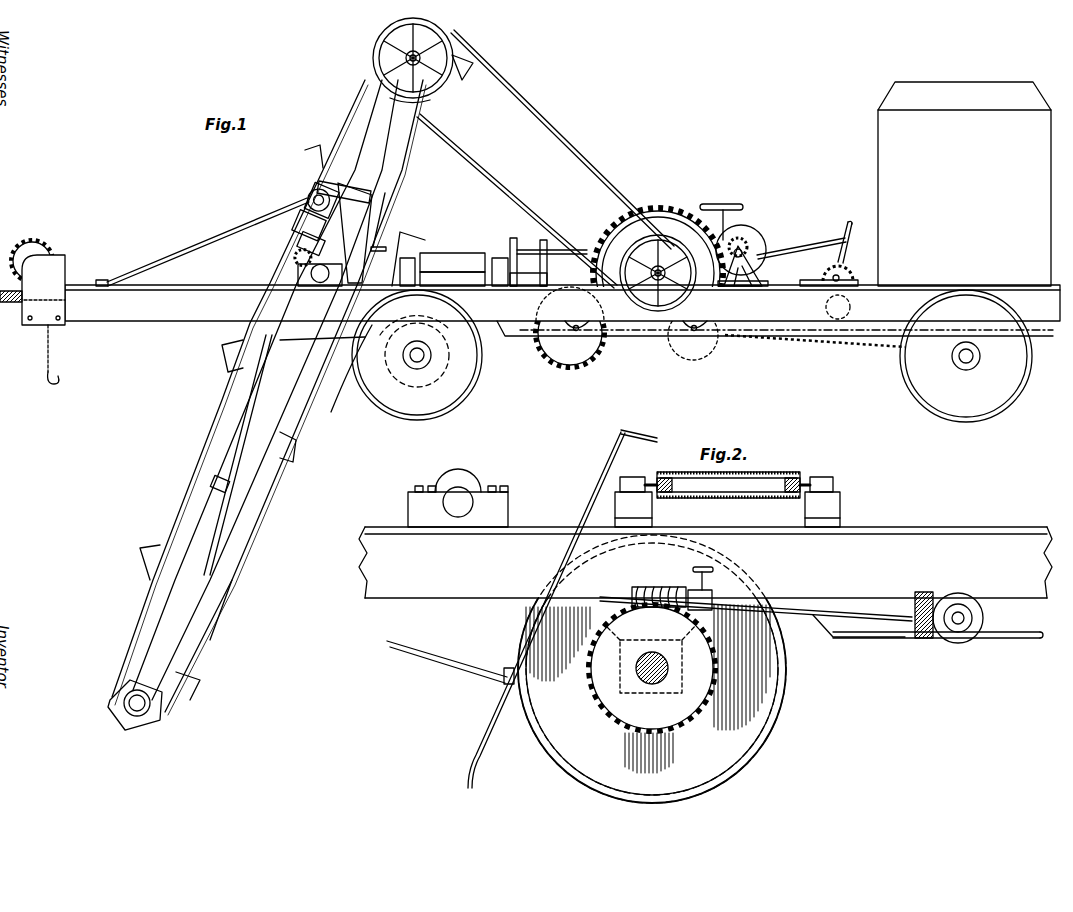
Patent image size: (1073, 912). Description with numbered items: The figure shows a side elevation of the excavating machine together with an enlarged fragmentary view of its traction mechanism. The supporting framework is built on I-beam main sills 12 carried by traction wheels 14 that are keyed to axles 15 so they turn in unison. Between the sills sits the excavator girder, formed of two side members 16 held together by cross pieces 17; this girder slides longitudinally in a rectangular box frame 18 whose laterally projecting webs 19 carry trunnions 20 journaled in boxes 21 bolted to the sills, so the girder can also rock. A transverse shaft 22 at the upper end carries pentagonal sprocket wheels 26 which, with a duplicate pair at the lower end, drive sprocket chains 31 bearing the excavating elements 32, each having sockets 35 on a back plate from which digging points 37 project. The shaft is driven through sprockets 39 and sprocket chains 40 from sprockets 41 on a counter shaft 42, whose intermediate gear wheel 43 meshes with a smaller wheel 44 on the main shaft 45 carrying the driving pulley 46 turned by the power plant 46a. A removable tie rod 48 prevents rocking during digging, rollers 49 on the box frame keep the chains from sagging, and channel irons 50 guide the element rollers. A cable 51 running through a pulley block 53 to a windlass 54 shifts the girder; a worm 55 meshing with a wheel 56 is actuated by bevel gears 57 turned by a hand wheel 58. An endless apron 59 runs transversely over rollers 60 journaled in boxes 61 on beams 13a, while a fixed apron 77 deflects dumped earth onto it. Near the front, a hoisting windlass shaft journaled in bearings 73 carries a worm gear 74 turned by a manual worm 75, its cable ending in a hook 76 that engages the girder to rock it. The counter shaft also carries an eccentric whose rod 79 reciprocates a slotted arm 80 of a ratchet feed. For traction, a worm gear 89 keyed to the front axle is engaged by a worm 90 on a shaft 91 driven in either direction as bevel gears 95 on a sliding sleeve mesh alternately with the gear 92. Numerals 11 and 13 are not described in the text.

In FIG. 1, the lever 11 is at (395, 259).
In FIG. 1, the main sills 12 is at (190, 318).
In FIG. 2, the main sills 12 is at (504, 592).
In FIG. 1, the bearing standard 13 is at (540, 286).
In FIG. 1, the beams 13a is at (416, 276).
In FIG. 2, the beams 13a is at (648, 498).
In FIG. 1, the traction wheels 14 is at (470, 372).
In FIG. 2, the traction wheels 14 is at (783, 695).
In FIG. 1, the axles 15 is at (432, 358).
In FIG. 2, the axles 15 is at (645, 652).
In FIG. 1, the side members 16 is at (232, 517).
In FIG. 1, the cross pieces 17 is at (228, 230).
In FIG. 1, the supporting box or frame 18 is at (345, 345).
In FIG. 1, the laterally projecting webs 19 is at (370, 180).
In FIG. 1, the lateral trunnions 20 is at (355, 275).
In FIG. 1, the boxes 21 is at (286, 305).
In FIG. 1, the transverse shaft 22 is at (445, 45).
In FIG. 1, the pentagonal sprocket wheels 26 is at (380, 50).
In FIG. 1, the sprocket chains 31 is at (226, 557).
In FIG. 1, the excavating elements 32 is at (465, 82).
In FIG. 1, the sockets 35 is at (151, 554).
In FIG. 1, the digging points 37 is at (302, 446).
In FIG. 1, the sprockets 39 is at (432, 90).
In FIG. 1, the sprocket chains 40 is at (500, 182).
In FIG. 1, the sprockets 41 is at (658, 273).
In FIG. 1, the counter shaft 42 is at (635, 270).
In FIG. 1, the intermediate gear wheel 43 is at (684, 213).
In FIG. 1, the smaller wheel 44 is at (752, 238).
In FIG. 1, the main shaft 45 is at (758, 262).
In FIG. 1, the driving pulley 46 is at (746, 212).
In FIG. 1, the power plant 46a is at (878, 158).
In FIG. 1, the tie rod 48 is at (322, 338).
In FIG. 1, the rollers 49 is at (344, 220).
In FIG. 1, the channel irons 50 is at (376, 214).
In FIG. 1, the cable 51 is at (248, 403).
In FIG. 1, the compound pulley block 53 is at (215, 485).
In FIG. 1, the windlass 54 is at (303, 272).
In FIG. 1, the worm 55 is at (286, 250).
In FIG. 1, the wheel 56 is at (297, 228).
In FIG. 1, the bevel gears 57 is at (298, 195).
In FIG. 1, the hand wheel 58 is at (307, 186).
In FIG. 1, the endless apron 59 is at (460, 258).
In FIG. 2, the endless apron 59 is at (708, 497).
In FIG. 2, the rollers 60 is at (756, 493).
In FIG. 2, the boxes 61 is at (828, 468).
In FIG. 1, the bearings 73 is at (32, 327).
In FIG. 1, the worm gear 74 is at (54, 250).
In FIG. 1, the worm 75 is at (11, 308).
In FIG. 1, the hook 76 is at (58, 380).
In FIG. 2, the fixed apron 77 is at (608, 466).
In FIG. 1, the eccentric rod 79 is at (798, 250).
In FIG. 1, the arm 80 is at (860, 233).
In FIG. 2, the worm gear 89 is at (600, 705).
In FIG. 2, the worm 90 is at (655, 588).
In FIG. 2, the shaft 91 is at (822, 620).
In FIG. 2, the gear 92 is at (928, 638).
In FIG. 2, the bevel gears 95 is at (972, 640).